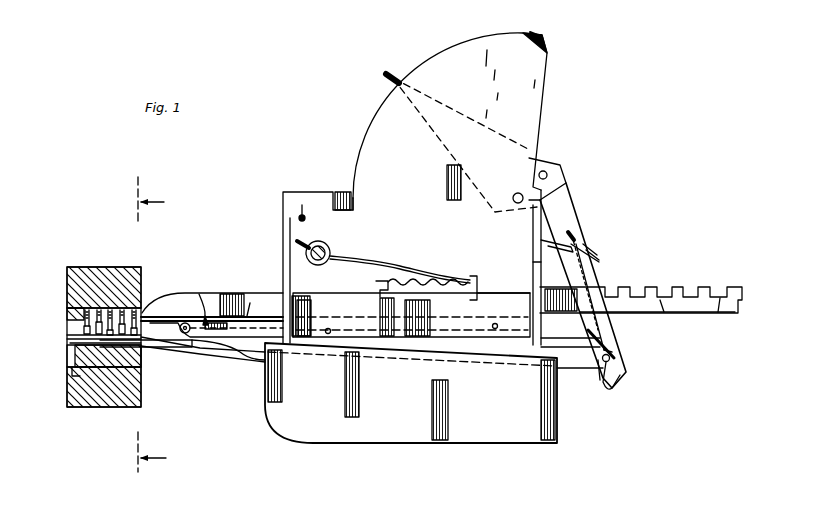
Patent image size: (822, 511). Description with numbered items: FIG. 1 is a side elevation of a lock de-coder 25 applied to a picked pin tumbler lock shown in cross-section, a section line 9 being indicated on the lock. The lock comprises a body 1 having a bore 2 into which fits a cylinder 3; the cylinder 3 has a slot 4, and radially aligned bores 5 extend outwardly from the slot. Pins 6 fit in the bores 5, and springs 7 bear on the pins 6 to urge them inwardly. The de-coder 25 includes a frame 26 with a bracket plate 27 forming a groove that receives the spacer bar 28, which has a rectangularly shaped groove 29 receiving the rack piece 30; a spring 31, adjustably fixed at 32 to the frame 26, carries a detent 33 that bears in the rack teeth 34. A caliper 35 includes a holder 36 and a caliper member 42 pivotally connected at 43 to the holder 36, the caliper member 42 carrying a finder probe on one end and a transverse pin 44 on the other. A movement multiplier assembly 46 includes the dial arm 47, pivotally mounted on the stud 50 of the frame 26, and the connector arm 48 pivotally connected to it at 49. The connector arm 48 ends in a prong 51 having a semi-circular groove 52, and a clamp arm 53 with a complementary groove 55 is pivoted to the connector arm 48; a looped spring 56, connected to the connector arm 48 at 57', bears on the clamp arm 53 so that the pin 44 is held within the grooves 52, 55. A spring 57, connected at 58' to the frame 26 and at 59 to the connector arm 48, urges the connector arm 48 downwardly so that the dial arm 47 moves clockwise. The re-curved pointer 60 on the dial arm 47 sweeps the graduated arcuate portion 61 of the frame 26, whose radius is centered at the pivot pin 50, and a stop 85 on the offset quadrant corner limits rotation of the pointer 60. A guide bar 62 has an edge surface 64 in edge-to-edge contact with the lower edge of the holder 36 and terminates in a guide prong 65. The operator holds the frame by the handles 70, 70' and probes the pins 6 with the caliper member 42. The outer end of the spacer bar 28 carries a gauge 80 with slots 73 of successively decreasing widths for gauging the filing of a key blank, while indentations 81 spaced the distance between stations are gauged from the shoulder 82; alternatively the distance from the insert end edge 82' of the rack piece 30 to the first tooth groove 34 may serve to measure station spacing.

The body 1 is at (68, 266).
The bore 2 is at (70, 388).
The cylinder 3 is at (70, 364).
The slot or opening 4 is at (104, 341).
The bores 5 is at (70, 314).
The pins 6 is at (70, 332).
The springs 7 is at (70, 344).
The section line 9 is at (159, 324).
The lock de-coder 25 is at (434, 446).
The frame 26 is at (323, 191).
The bracket plate 27 is at (368, 338).
The spacer bar 28 is at (225, 298).
The rectangularly shaped groove 29 is at (369, 284).
The rack piece 30 is at (466, 286).
The spring 31 is at (350, 258).
The adjustable fixing point 32 is at (296, 240).
The detent 33 is at (438, 279).
The rack teeth 34 is at (438, 296).
The caliper 35 is at (199, 294).
The holder 36 is at (305, 285).
The caliper member 42 is at (151, 315).
The pivotal connection 43 is at (186, 322).
The pin 44 is at (613, 345).
The movement multiplier assembly 46 is at (574, 204).
The dial arm 47 is at (552, 168).
The connector arm 48 is at (580, 236).
The pivotal connection 49 is at (548, 176).
The pin or stud 50 is at (514, 193).
The prong 51 is at (614, 354).
The semi-circular groove 52 is at (612, 360).
The clamp arm 53 is at (616, 380).
The semi-circular groove 55 is at (603, 374).
The looped spring 56 is at (588, 322).
The spring 57 is at (546, 240).
The connection point 57' is at (610, 289).
The connection point 58' is at (604, 218).
The connection point 59 is at (298, 213).
The re-curved pointer 60 is at (387, 79).
The arcuate portion 61 is at (437, 52).
The guide bar 62 is at (250, 362).
The edge surface 64 is at (204, 355).
The guide prong 65 is at (148, 348).
The handle 70 is at (284, 250).
The handle 70' is at (523, 271).
The slots 73 is at (690, 286).
The gauge 80 is at (722, 314).
The indentations 81 is at (667, 313).
The shoulder 82 is at (680, 316).
The insert end edge 82' is at (503, 269).
The stop 85 is at (533, 32).